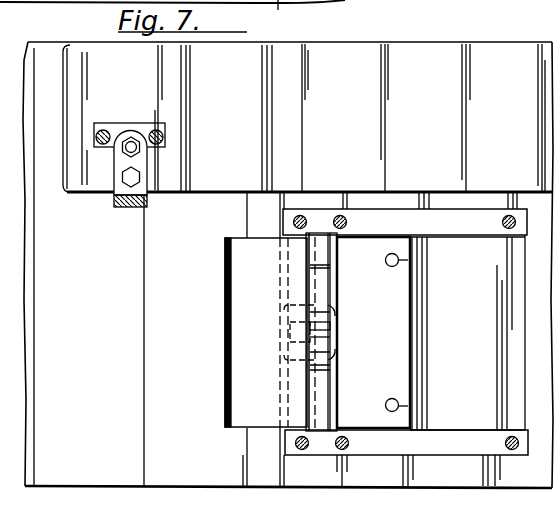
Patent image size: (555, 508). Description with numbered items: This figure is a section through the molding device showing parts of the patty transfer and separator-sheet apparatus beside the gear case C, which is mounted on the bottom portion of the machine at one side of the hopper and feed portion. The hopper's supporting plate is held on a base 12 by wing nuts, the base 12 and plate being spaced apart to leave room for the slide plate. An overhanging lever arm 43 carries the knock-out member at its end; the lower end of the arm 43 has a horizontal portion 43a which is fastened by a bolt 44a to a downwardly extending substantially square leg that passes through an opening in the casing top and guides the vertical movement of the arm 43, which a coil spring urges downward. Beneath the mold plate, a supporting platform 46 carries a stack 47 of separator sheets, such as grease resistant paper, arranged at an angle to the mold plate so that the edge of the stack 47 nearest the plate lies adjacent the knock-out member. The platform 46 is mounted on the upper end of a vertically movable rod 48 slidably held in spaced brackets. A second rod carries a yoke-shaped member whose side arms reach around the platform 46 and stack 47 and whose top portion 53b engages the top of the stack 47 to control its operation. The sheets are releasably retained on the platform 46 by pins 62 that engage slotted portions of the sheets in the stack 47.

The gear case C is at (476, 60).
The base 12 is at (484, 270).
The overhanging lever arm 43 is at (135, 209).
The horizontal portion 43a is at (118, 167).
The bolt 44a is at (131, 143).
The supporting platform 46 is at (223, 276).
The stack 47 is at (245, 382).
The vertically movable rod 48 is at (292, 330).
The top portion 53b is at (322, 292).
The pins 62 is at (398, 258).